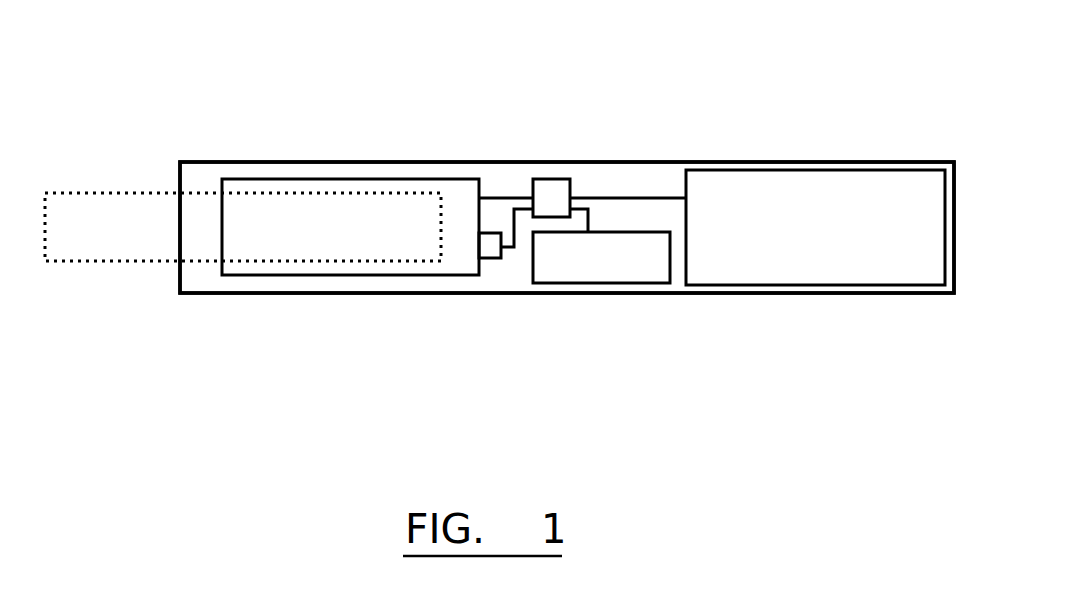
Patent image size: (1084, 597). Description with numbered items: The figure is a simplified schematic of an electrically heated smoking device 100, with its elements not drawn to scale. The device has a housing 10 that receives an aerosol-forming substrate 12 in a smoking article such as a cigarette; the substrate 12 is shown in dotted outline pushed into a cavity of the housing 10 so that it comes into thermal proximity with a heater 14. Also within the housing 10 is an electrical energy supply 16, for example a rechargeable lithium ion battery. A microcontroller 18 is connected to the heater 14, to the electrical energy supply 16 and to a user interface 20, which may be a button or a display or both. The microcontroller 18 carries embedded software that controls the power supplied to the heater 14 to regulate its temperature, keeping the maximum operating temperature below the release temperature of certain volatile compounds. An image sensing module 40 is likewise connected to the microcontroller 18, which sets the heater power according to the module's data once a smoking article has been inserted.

The electrically heated smoking device 100 is at (185, 138).
The housing 10 is at (250, 160).
The aerosol-forming substrate 12 is at (106, 225).
The heater 14 is at (460, 207).
The electrical energy supply 16 is at (803, 203).
The microcontroller 18 is at (552, 198).
The user interface 20 is at (596, 260).
The image sensing module 40 is at (490, 250).